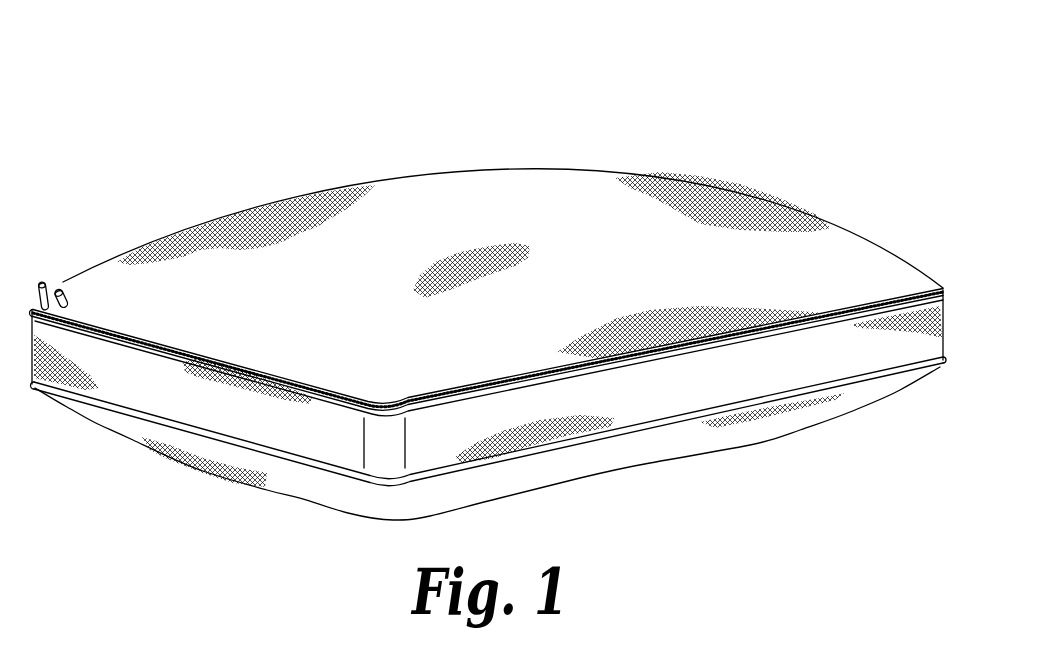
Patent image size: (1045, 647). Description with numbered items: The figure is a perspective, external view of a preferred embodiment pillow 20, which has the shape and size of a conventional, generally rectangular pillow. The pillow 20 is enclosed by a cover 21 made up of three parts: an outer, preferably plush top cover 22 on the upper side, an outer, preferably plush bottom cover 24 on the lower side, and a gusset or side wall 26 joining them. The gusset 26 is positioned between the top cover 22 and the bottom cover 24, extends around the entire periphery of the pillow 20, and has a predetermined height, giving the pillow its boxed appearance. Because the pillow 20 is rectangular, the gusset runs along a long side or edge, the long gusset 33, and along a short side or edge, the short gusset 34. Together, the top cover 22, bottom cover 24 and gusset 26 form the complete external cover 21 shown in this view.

The pillow 20 is at (811, 107).
The cover 21 is at (880, 235).
The top cover 22 is at (483, 197).
The bottom cover 24 is at (602, 458).
The gusset 26 is at (630, 390).
The long gusset 33 is at (473, 427).
The short gusset 34 is at (157, 383).